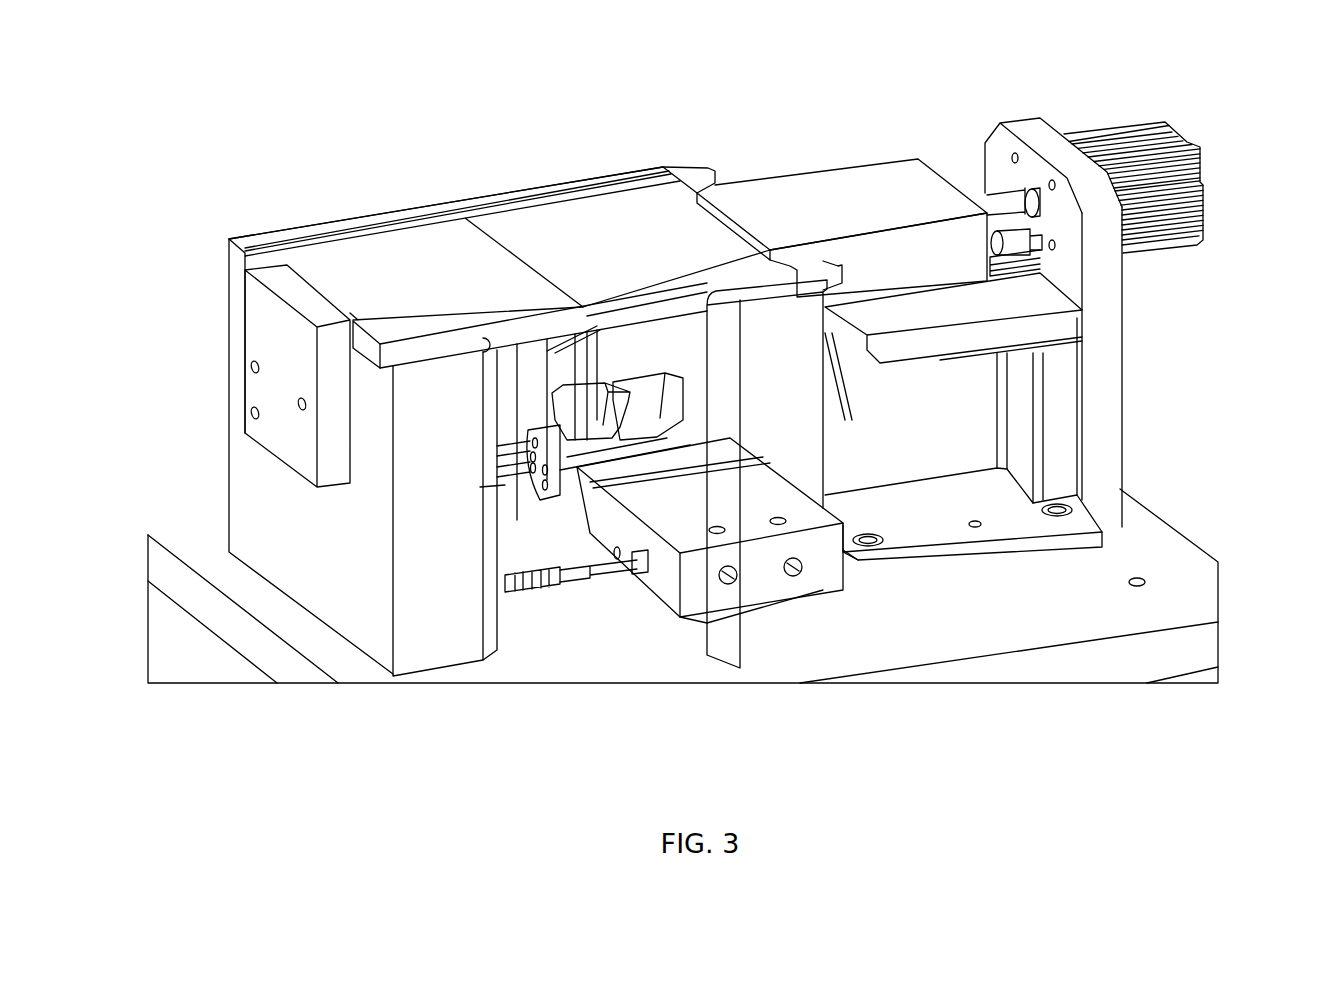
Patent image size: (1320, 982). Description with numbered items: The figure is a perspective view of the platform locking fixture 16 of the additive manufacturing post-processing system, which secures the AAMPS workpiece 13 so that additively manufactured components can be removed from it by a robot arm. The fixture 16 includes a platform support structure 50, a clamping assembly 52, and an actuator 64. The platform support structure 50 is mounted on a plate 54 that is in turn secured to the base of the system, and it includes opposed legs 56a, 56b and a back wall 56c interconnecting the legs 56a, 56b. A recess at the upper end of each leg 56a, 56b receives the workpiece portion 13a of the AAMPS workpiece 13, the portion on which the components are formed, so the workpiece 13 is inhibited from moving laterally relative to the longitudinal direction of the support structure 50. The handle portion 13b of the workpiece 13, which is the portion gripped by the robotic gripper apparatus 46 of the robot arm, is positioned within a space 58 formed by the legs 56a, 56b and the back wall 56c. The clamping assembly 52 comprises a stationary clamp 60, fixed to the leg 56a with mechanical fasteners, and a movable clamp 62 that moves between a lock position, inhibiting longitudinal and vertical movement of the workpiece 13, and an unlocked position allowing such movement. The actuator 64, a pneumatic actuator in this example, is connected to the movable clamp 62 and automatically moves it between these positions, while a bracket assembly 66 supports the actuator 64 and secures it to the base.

The AAMPS workpiece 13 is at (650, 188).
The workpiece portion 13a is at (436, 244).
The handle portion 13b is at (528, 416).
The platform locking fixture 16 is at (318, 188).
The robotic gripper apparatus 46 is at (707, 582).
The platform support structure 50 is at (291, 572).
The clamping assembly 52 is at (903, 153).
The plate 54 is at (1108, 600).
The leg 56a is at (392, 563).
The leg 56b is at (785, 383).
The back wall 56c is at (515, 517).
The space 58 is at (551, 543).
The stationary clamp 60 is at (258, 392).
The movable clamp 62 is at (793, 195).
The actuator 64 is at (1180, 195).
The bracket assembly 66 is at (1036, 497).